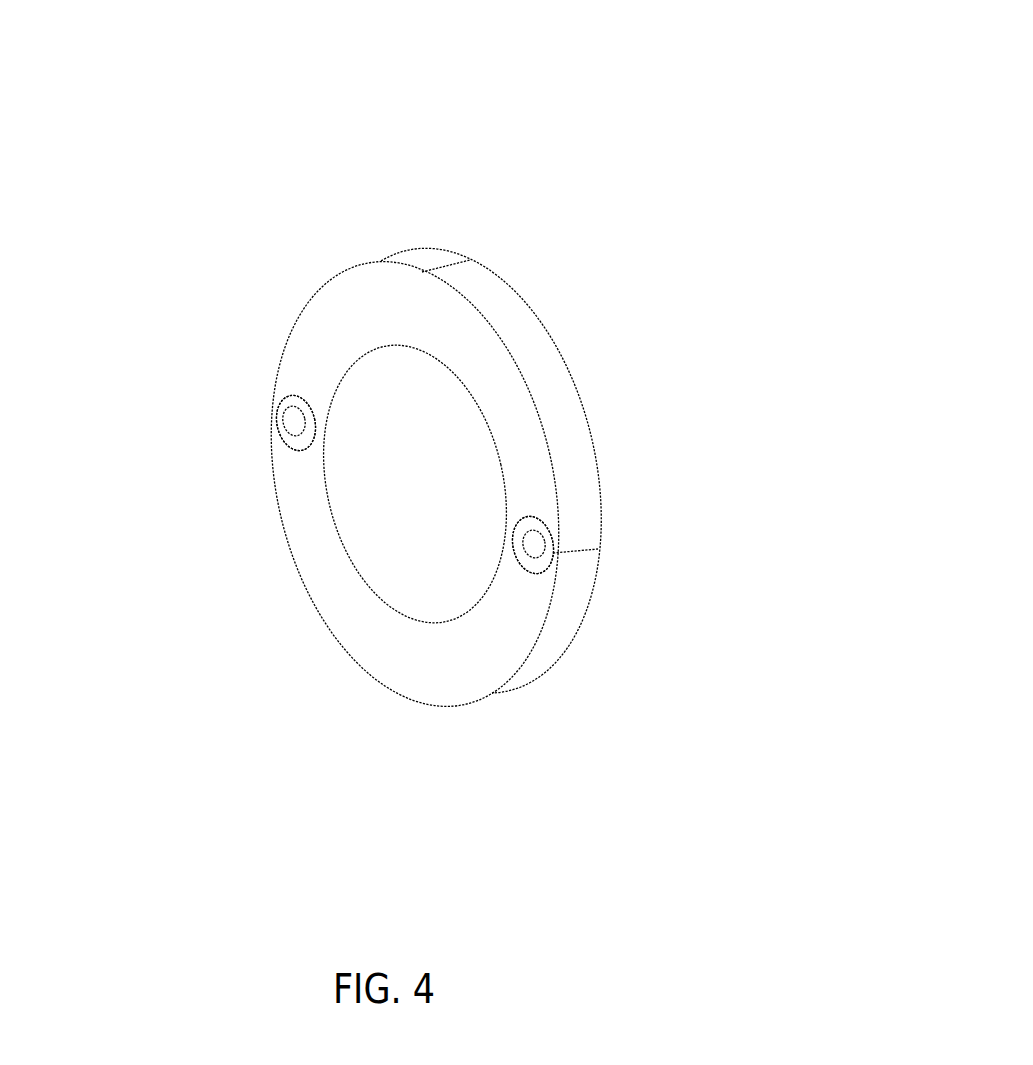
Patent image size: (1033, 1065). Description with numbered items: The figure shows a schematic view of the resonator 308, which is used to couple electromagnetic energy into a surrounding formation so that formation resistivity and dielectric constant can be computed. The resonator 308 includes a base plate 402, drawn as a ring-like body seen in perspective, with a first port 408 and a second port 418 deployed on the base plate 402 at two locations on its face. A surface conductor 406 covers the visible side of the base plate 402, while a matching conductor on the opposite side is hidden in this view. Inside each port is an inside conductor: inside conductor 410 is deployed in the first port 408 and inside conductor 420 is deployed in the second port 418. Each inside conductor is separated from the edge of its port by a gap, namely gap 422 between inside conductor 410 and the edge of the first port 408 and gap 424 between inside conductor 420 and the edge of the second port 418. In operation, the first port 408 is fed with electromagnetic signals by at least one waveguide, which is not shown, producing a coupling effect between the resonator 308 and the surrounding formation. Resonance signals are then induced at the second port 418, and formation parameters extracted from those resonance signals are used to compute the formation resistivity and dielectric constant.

The resonator 308 is at (535, 154).
The base plate 402 is at (547, 420).
The surface conductor 406 is at (413, 657).
The first port 408 is at (531, 545).
The inside conductor 410 is at (534, 551).
The second port 418 is at (294, 422).
The inside conductor 420 is at (296, 419).
The gap 422 is at (534, 567).
The gap 424 is at (298, 442).